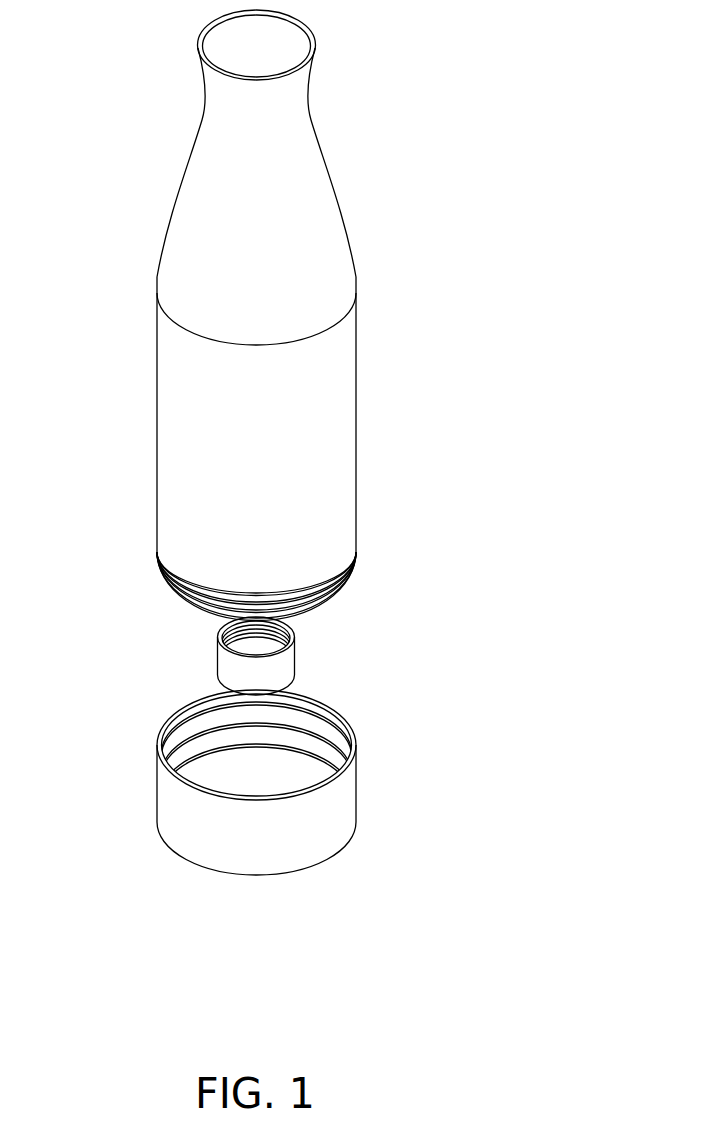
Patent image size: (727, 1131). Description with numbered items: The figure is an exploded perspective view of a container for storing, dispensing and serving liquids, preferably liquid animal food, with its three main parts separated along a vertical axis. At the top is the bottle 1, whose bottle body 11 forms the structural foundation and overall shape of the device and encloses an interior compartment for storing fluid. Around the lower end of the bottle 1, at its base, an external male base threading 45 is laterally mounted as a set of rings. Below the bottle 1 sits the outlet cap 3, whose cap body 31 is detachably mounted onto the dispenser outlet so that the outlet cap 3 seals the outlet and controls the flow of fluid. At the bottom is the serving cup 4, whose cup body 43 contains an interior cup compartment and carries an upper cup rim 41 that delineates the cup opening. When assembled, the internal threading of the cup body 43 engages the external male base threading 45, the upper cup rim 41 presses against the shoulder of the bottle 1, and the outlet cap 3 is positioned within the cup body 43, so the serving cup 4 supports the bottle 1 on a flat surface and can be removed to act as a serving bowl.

The bottle 1 is at (467, 334).
The bottle body 11 is at (350, 435).
The external male base threading 45 is at (350, 568).
The outlet cap 3 is at (217, 654).
The cap body 31 is at (256, 652).
The serving cup 4 is at (260, 782).
The upper cup rim 41 is at (355, 740).
The cup body 43 is at (242, 770).